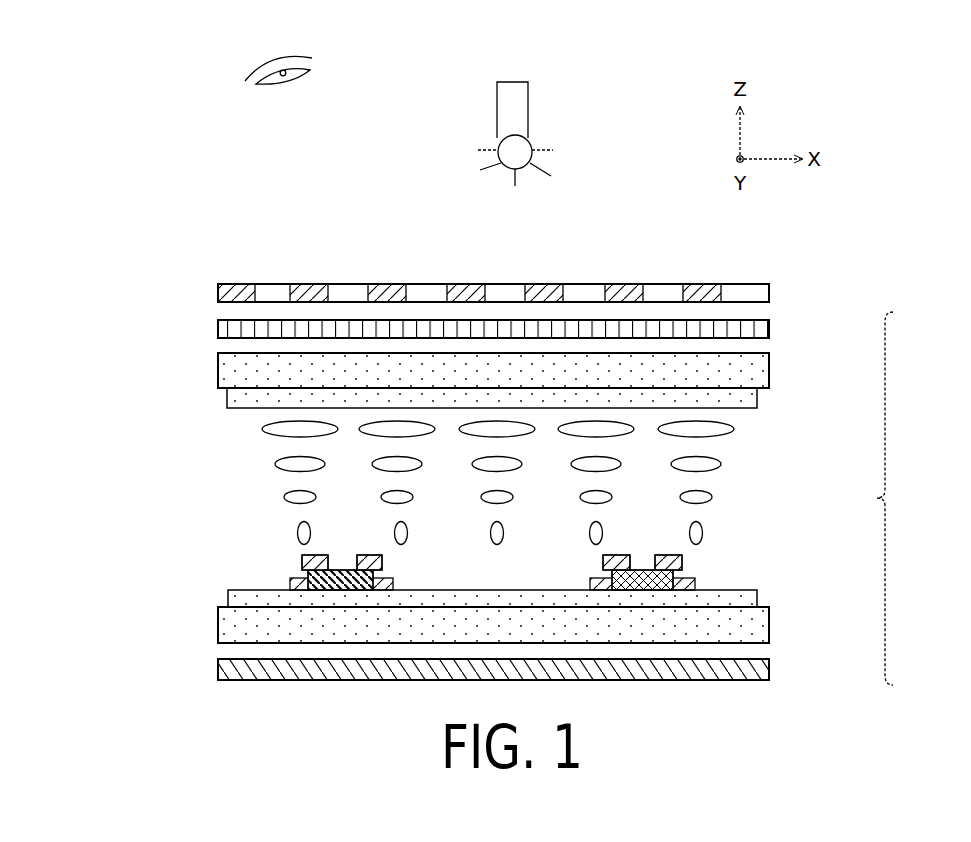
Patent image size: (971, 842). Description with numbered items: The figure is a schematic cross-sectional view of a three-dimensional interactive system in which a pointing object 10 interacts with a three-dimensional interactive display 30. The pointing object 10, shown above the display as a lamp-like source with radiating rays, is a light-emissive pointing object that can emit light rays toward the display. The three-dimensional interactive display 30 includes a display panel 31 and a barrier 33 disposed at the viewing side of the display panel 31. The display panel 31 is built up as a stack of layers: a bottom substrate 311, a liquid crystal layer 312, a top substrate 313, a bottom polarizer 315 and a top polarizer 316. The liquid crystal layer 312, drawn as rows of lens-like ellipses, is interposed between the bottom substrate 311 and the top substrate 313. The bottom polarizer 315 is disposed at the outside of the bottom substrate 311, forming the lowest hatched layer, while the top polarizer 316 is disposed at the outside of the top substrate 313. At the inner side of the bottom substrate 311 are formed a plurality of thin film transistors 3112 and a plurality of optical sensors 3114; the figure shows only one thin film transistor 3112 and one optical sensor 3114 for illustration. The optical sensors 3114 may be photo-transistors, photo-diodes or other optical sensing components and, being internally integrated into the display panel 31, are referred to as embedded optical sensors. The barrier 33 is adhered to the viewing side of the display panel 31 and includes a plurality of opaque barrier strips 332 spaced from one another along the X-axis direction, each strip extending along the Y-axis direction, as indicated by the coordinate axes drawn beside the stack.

The pointing object 10 is at (520, 110).
The 3D interactive display 30 is at (860, 240).
The display panel 31 is at (900, 498).
The barrier 33 is at (526, 274).
The opaque barrier strips 332 is at (715, 287).
The top polarizer 316 is at (771, 332).
The top substrate 313 is at (773, 376).
The liquid crystal layer 312 is at (725, 493).
The thin film transistor 3112 is at (300, 567).
The optical sensor 3114 is at (684, 567).
The bottom substrate 311 is at (772, 627).
The bottom polarizer 315 is at (772, 670).